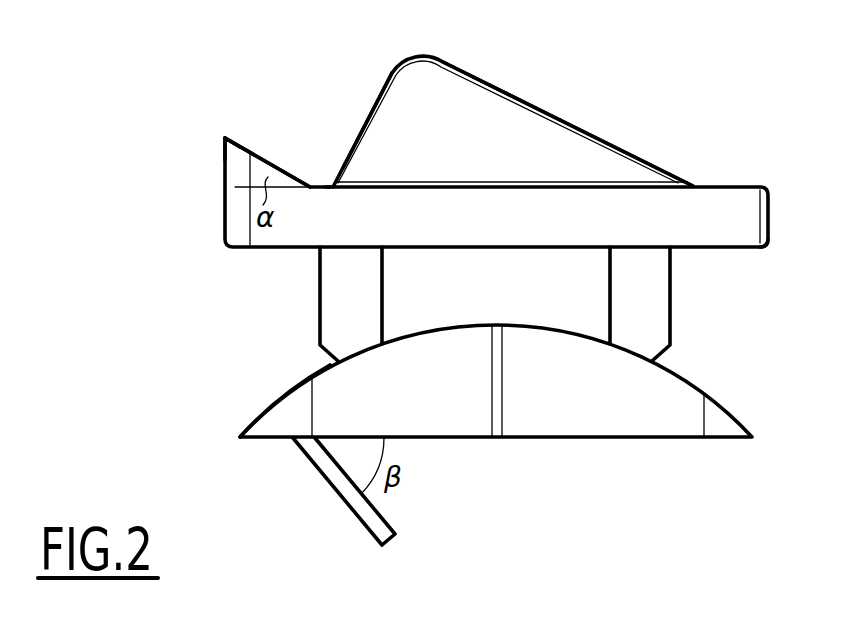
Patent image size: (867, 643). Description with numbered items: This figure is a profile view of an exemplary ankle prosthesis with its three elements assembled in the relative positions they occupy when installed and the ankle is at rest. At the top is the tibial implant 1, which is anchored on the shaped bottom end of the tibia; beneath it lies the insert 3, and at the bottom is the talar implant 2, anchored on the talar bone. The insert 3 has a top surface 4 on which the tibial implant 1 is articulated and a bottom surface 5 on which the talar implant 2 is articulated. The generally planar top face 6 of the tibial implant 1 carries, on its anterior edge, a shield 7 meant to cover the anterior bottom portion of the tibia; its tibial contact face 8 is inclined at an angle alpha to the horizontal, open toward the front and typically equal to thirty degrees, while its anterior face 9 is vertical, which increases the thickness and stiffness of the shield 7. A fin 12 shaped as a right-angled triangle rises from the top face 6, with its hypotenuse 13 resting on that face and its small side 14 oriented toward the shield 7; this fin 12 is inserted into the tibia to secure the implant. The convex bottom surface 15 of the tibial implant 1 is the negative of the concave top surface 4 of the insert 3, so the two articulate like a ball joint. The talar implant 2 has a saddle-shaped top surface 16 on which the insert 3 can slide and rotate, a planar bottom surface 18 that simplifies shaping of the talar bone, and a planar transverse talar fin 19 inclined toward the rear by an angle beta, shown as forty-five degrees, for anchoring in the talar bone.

The tibial implant 1 is at (647, 147).
The talar implant 2 is at (585, 457).
The insert 3 is at (270, 302).
The top surface 4 is at (410, 243).
The bottom surface 5 is at (560, 336).
The top face 6 is at (328, 183).
The shield 7 is at (243, 160).
The tibial contact face 8 is at (260, 147).
The anterior face 9 is at (222, 150).
The fin 12 is at (473, 117).
The hypotenuse 13 is at (548, 180).
The small side 14 is at (380, 97).
The bottom surface 15 is at (720, 250).
The top surface 16 is at (297, 385).
The bottom surface 18 is at (493, 438).
The talar fin 19 is at (367, 516).